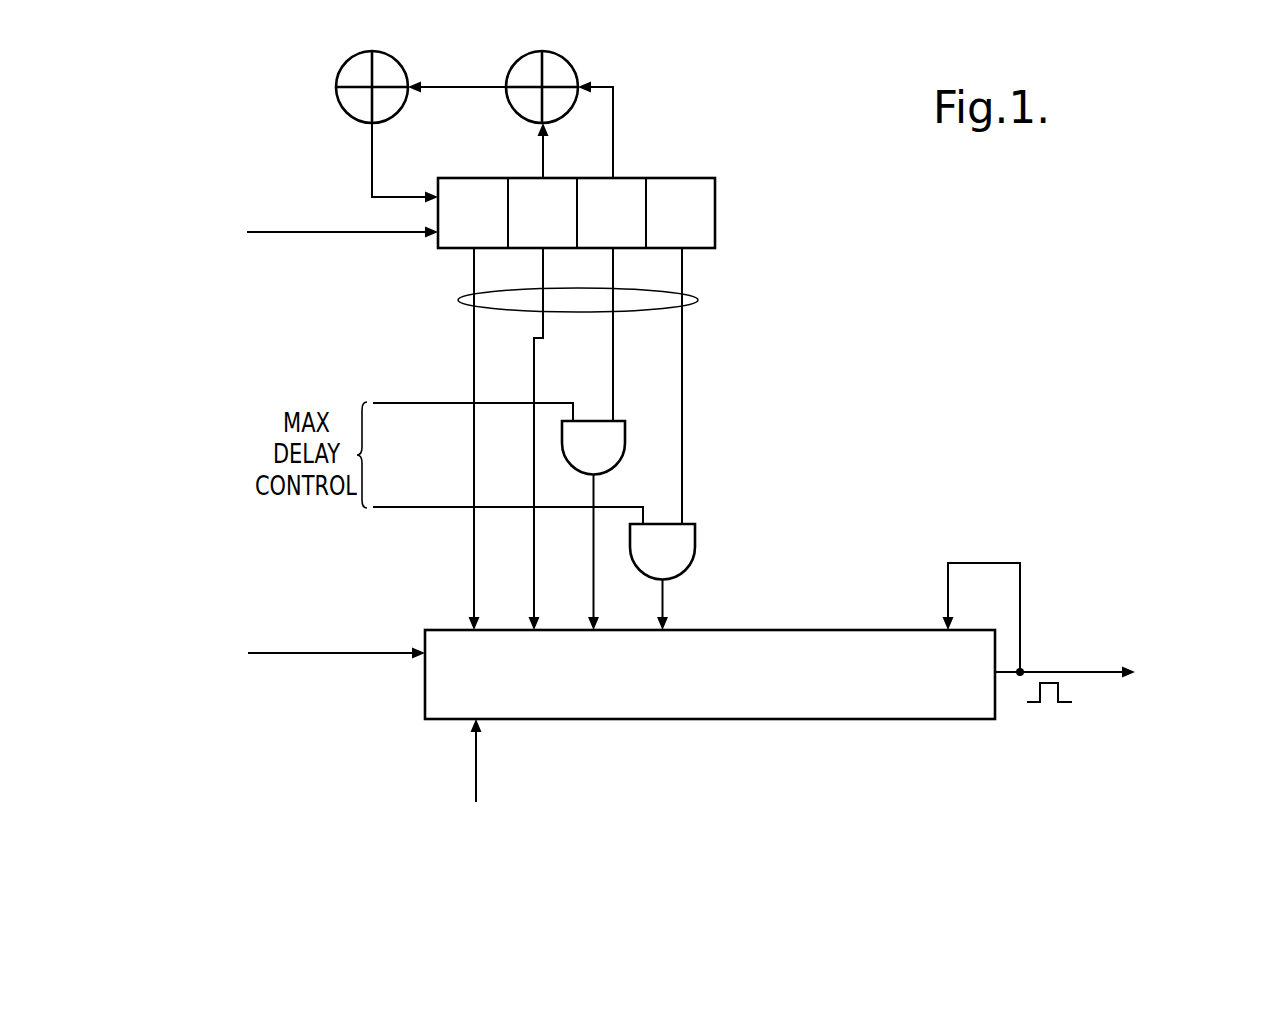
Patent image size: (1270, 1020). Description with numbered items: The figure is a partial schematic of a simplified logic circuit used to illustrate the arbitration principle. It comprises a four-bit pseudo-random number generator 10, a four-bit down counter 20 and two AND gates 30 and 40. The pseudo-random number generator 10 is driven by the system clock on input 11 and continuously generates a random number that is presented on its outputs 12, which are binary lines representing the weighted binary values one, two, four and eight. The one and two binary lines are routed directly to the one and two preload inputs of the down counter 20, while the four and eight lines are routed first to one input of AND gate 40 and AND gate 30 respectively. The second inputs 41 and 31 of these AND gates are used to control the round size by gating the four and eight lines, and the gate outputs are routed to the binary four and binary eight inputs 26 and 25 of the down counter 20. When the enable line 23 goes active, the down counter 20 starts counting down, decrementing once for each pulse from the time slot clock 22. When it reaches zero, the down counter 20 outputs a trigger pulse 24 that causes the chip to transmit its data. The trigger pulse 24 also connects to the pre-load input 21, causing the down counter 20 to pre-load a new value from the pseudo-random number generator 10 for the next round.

The pseudo-random number generator 10 is at (715, 205).
The system clock input 11 is at (336, 233).
The outputs of the pseudo-random number generator 12 is at (698, 300).
The down counter 20 is at (825, 720).
The pre-load input 21 is at (978, 563).
The time slot clock 22 is at (400, 656).
The enable line 23 is at (476, 765).
The trigger pulse 24 is at (1073, 672).
The binary 8 input 25 is at (663, 593).
The binary 4 input 26 is at (593, 592).
The AND gate 30 is at (695, 545).
The AND gate input 31 is at (388, 507).
The AND gate 40 is at (625, 441).
The AND gate input 41 is at (388, 403).